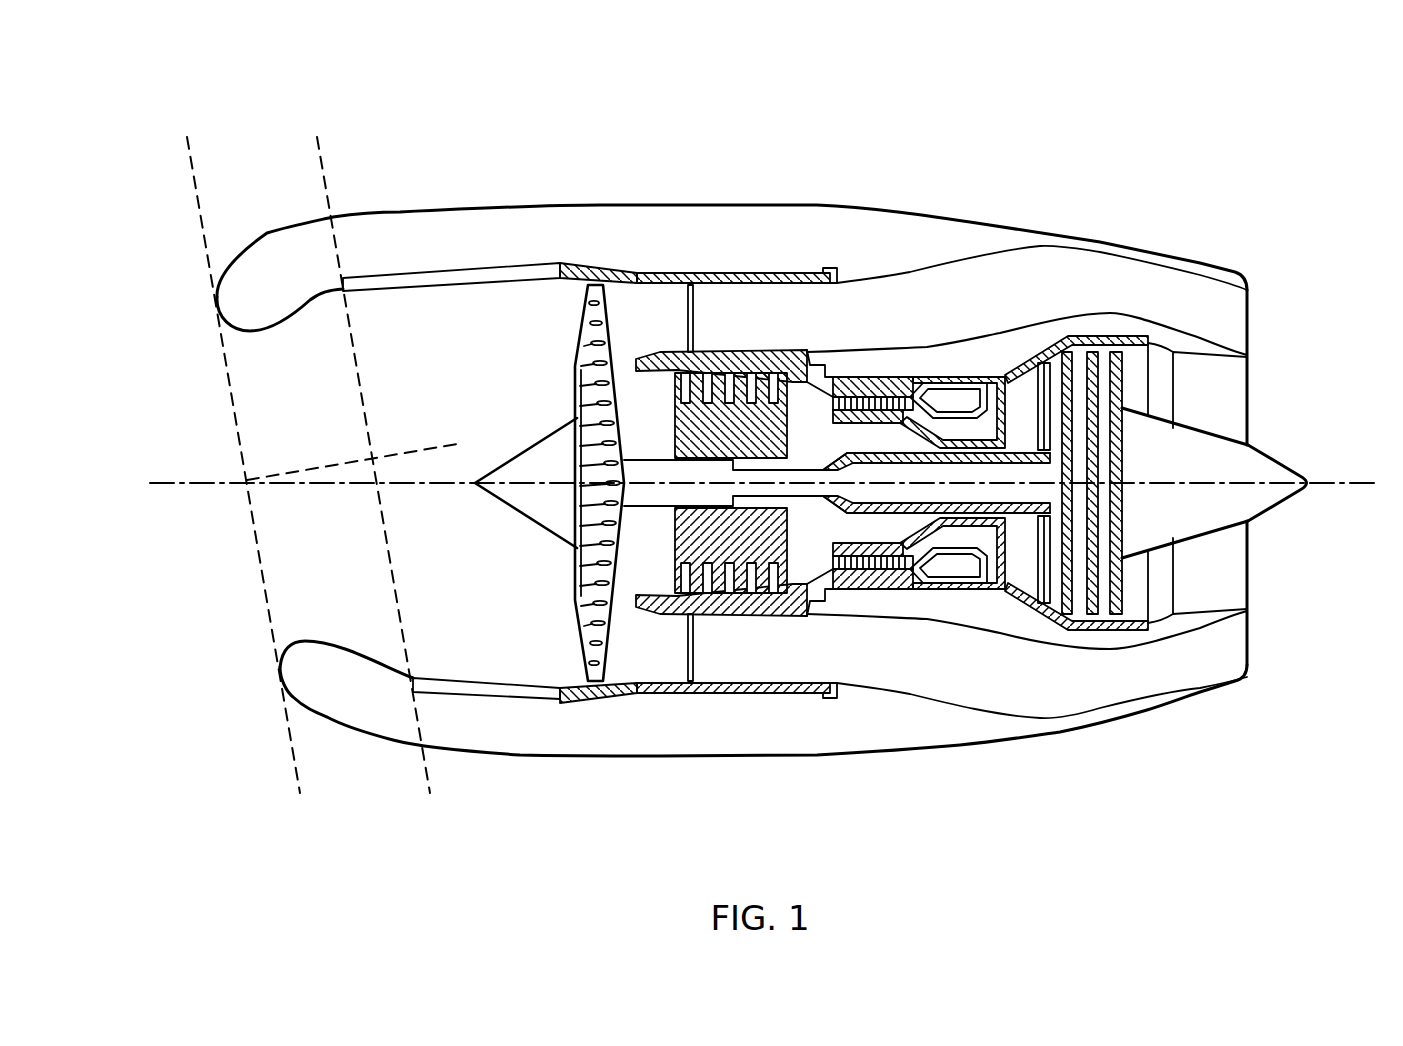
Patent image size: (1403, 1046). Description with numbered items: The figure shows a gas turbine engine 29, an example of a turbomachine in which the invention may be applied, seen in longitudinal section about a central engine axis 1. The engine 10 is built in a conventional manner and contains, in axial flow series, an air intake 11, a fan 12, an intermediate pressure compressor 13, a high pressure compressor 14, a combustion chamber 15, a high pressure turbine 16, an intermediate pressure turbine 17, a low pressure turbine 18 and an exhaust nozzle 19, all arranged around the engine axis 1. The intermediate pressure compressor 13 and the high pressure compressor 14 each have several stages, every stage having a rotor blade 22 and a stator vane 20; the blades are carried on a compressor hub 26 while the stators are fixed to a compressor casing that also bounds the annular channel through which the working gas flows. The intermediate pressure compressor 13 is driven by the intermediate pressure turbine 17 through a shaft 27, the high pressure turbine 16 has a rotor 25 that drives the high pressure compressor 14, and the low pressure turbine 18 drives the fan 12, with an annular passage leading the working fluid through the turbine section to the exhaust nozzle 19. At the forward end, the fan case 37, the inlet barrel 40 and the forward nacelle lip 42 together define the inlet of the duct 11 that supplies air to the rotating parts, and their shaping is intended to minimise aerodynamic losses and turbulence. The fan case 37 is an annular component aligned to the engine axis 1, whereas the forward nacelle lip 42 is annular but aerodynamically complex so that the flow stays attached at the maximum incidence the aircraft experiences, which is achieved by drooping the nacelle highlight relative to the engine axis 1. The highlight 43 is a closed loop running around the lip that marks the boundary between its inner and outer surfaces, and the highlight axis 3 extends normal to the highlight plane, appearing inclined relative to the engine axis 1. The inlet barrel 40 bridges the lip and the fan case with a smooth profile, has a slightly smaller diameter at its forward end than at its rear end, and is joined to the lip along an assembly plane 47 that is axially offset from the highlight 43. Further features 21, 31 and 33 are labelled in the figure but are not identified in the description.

The engine axis 1 is at (378, 486).
The highlight axis 3 is at (450, 443).
The engine 10 is at (990, 270).
The air intake 11 is at (447, 380).
The fan 12 is at (608, 313).
The intermediate pressure compressor 13 is at (757, 418).
The high pressure compressor 14 is at (865, 390).
The combustion chamber 15 is at (960, 397).
The high pressure turbine 16 is at (1003, 371).
The intermediate pressure turbine 17 is at (1048, 350).
The low pressure turbine 18 is at (1129, 337).
The exhaust nozzle 19 is at (1163, 396).
The stator vane 20 is at (691, 595).
The compressor casing 21 is at (723, 613).
The rotor blade 22 is at (759, 584).
The rotor 25 is at (1007, 541).
The compressor hub 26 is at (778, 522).
The shaft 27 is at (1129, 508).
The gas turbine engine 29 is at (750, 172).
The nacelle trailing edge 31 is at (1235, 271).
The bypass duct 33 is at (976, 683).
The fan case 37 is at (583, 263).
The inlet barrel 40 is at (383, 277).
The forward nacelle lip 42 is at (265, 329).
The highlight 43 is at (192, 176).
The assembly plane 47 is at (430, 782).